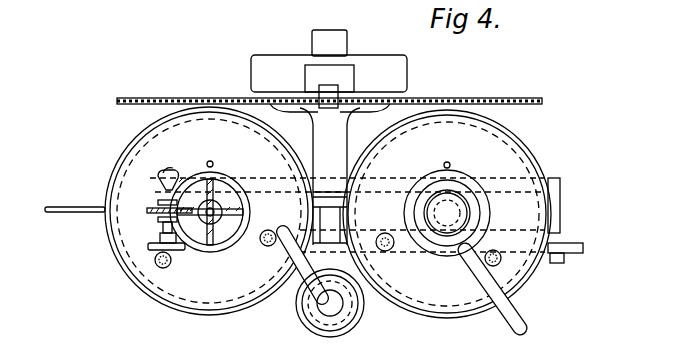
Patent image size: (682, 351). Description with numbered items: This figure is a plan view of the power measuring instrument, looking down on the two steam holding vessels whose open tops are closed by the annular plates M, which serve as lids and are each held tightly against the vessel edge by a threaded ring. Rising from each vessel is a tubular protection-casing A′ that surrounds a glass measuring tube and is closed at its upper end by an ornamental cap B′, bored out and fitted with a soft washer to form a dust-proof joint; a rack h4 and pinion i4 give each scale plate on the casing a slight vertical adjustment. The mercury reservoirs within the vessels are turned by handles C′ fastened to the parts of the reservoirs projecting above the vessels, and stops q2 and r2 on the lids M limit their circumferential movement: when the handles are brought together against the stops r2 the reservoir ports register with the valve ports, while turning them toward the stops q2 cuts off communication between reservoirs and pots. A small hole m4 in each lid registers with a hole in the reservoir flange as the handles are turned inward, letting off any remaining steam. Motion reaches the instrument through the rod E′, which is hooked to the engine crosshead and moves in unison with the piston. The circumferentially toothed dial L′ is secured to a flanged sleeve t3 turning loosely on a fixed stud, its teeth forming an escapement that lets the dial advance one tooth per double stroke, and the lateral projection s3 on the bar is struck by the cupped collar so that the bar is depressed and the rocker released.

The circumferentially toothed dial L′ is at (329, 89).
The flanged sleeve t3 is at (330, 176).
The rod E′ is at (78, 207).
The annular plate M is at (344, 212).
The small hole m4 is at (222, 160).
The tubular protection-casing A′ is at (216, 203).
The pinion i4 is at (161, 208).
The rack h4 is at (175, 209).
The stop q2 is at (338, 267).
The stop r2 is at (327, 249).
The handle C′ is at (401, 280).
The lateral projection s3 is at (298, 304).
The ornamental cap B′ is at (455, 213).